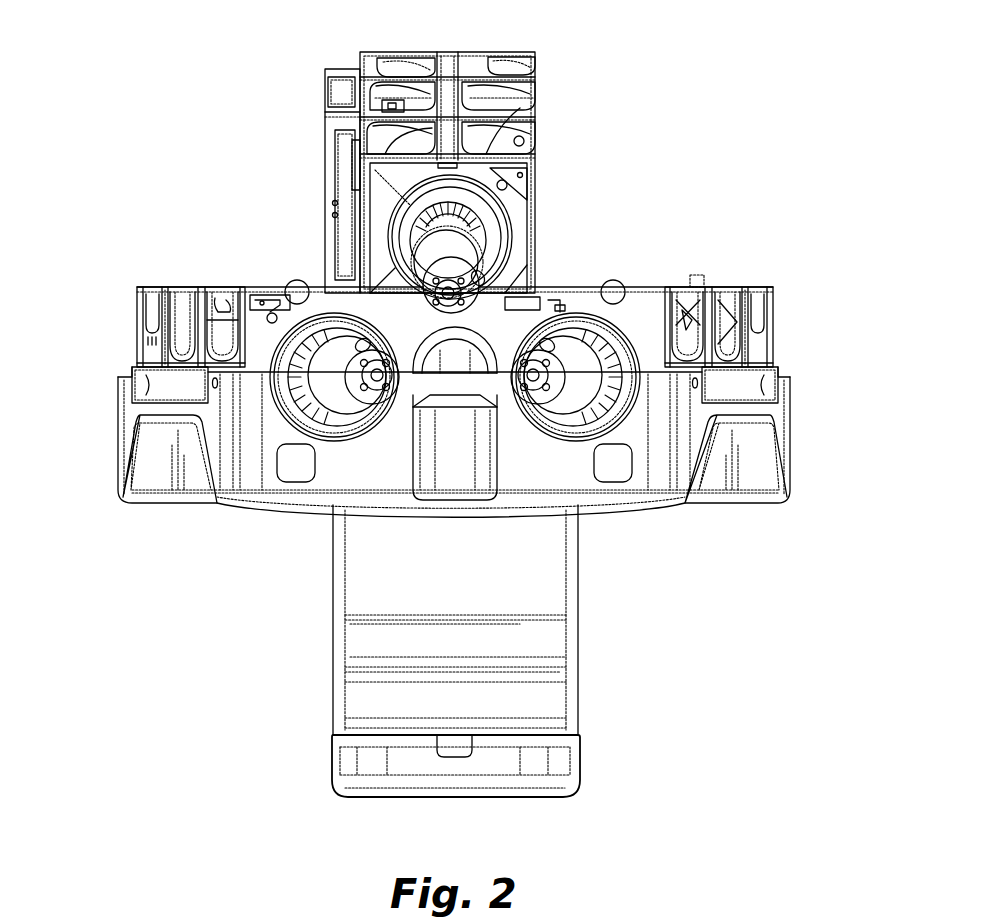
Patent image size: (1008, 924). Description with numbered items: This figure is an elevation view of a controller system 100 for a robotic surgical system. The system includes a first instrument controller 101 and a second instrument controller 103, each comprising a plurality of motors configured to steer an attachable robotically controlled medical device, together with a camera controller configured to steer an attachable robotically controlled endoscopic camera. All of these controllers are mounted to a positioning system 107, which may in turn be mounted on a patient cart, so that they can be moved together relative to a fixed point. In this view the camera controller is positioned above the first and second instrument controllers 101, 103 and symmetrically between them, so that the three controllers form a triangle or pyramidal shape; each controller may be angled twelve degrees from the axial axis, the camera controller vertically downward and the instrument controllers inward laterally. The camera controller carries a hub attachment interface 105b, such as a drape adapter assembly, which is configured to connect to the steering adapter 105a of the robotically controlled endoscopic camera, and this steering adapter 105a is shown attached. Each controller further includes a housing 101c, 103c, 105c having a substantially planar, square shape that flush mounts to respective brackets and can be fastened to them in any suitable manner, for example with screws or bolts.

The controller system 100 is at (628, 140).
The first instrument controller 101 is at (720, 348).
The housing 101c is at (762, 288).
The second instrument controller 103 is at (200, 338).
The housing 103c is at (140, 348).
The steering adapter 105a is at (421, 261).
The hub attachment interface 105b is at (485, 218).
The housing 105c is at (537, 181).
The positioning system 107 is at (697, 467).